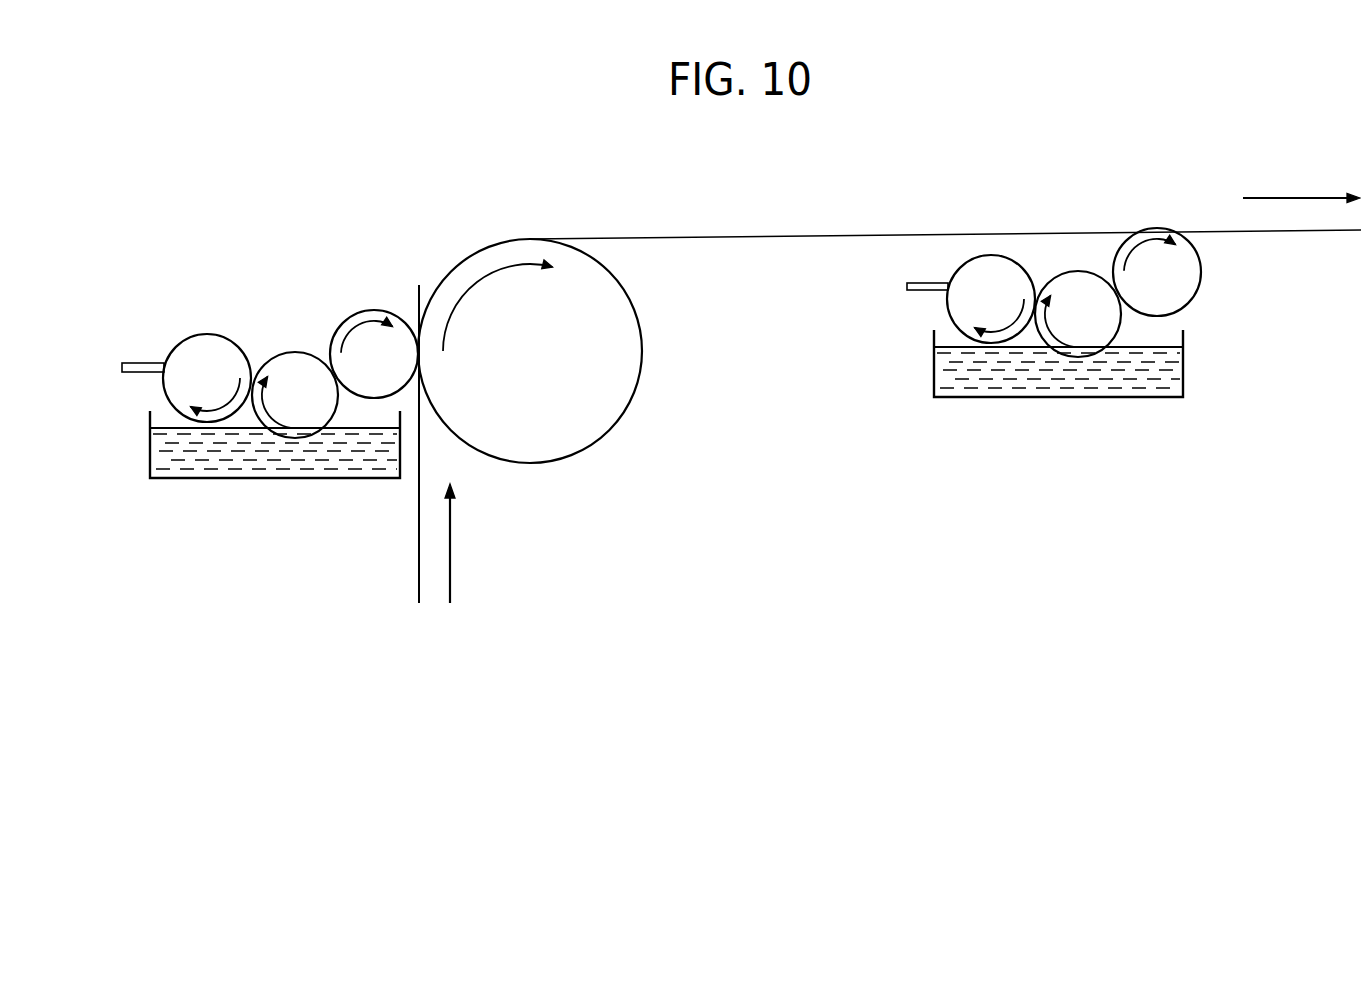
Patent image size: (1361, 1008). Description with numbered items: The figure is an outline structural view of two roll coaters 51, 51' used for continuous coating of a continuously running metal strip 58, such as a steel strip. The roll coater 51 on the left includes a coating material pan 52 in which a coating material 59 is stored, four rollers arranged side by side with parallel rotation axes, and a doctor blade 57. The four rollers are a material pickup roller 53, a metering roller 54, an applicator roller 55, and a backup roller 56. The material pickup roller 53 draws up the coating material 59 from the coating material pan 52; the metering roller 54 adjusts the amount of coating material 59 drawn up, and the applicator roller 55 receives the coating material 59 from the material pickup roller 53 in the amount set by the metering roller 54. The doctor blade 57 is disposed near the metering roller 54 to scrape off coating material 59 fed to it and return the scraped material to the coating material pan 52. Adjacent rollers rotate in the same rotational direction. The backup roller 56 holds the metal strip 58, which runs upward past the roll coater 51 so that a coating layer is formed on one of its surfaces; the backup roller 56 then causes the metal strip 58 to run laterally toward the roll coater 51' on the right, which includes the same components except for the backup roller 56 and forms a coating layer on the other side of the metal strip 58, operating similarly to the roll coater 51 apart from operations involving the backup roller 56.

The roll coater 51 is at (427, 271).
The roll coater 51' is at (945, 238).
The coating material pan 52 is at (150, 454).
The material pickup roller 53 is at (292, 358).
The metering roller 54 is at (205, 345).
The applicator roller 55 is at (374, 315).
The backup roller 56 is at (618, 397).
The doctor blade 57 is at (137, 363).
The metal strip 58 is at (418, 546).
The coating material 59 is at (189, 470).